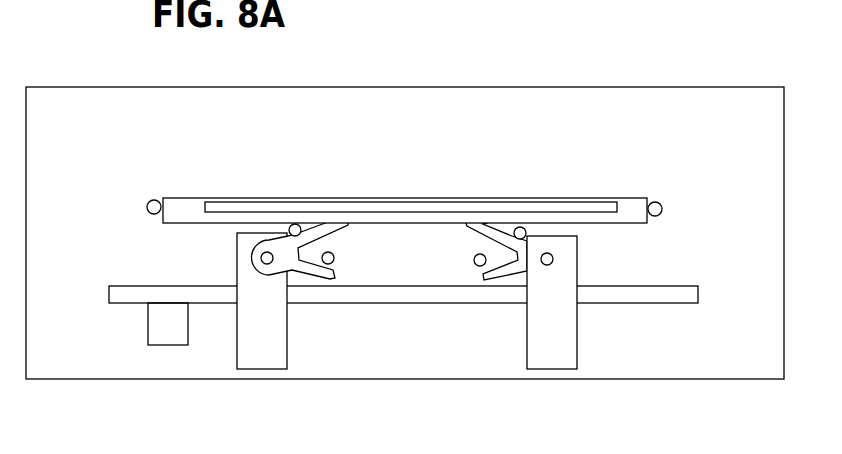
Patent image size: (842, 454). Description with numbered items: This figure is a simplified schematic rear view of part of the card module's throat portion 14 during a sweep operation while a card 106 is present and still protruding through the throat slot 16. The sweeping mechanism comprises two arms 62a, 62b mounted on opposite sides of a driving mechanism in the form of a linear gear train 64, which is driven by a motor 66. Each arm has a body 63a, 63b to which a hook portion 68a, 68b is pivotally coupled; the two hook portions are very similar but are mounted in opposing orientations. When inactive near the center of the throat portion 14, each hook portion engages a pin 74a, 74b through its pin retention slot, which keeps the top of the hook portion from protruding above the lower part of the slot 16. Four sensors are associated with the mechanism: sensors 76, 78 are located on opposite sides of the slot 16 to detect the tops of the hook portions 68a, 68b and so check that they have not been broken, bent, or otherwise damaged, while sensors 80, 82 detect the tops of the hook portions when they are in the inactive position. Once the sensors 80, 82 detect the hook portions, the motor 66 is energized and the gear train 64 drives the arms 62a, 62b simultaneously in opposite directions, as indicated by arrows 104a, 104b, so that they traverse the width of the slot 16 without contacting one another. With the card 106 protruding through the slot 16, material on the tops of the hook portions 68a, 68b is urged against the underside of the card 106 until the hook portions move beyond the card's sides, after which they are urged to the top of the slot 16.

The throat portion 14 is at (535, 87).
The slot 16 is at (190, 198).
The arm 62a is at (243, 320).
The arm 62b is at (573, 321).
The body 63a is at (280, 352).
The body 63b is at (533, 352).
The linear gear train 64 is at (112, 293).
The motor 66 is at (152, 333).
The hook portion 68a is at (337, 233).
The hook portion 68b is at (468, 235).
The pin 74a is at (334, 263).
The pin 74b is at (474, 265).
The sensor 76 is at (147, 204).
The sensor 78 is at (663, 206).
The sensor 80 is at (293, 224).
The sensor 82 is at (522, 227).
The arrow 104a is at (237, 258).
The arrow 104b is at (577, 259).
The card 106 is at (397, 208).